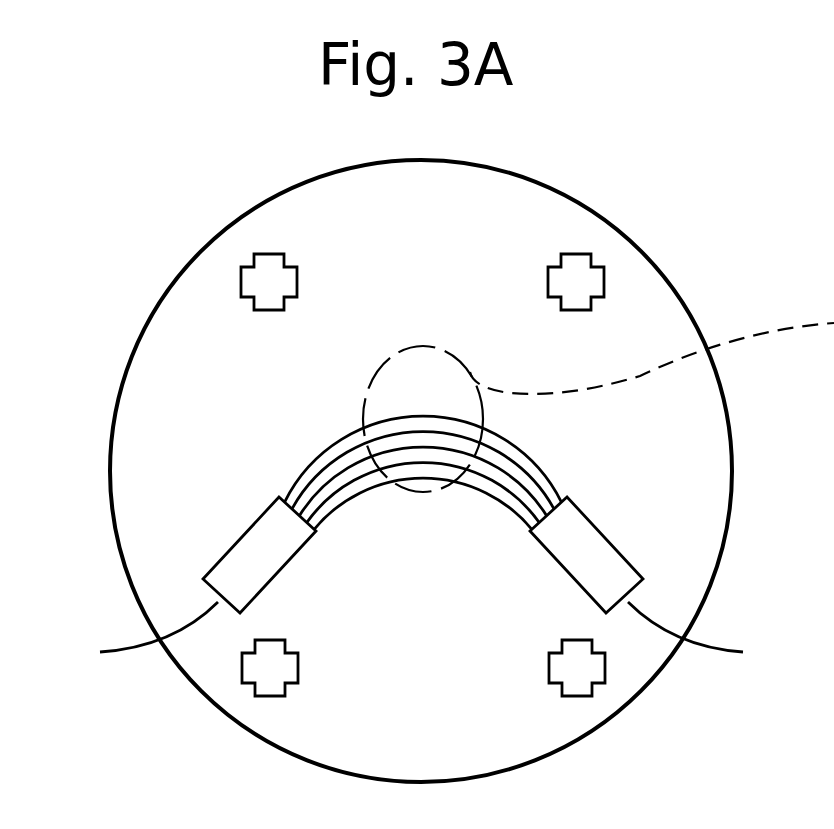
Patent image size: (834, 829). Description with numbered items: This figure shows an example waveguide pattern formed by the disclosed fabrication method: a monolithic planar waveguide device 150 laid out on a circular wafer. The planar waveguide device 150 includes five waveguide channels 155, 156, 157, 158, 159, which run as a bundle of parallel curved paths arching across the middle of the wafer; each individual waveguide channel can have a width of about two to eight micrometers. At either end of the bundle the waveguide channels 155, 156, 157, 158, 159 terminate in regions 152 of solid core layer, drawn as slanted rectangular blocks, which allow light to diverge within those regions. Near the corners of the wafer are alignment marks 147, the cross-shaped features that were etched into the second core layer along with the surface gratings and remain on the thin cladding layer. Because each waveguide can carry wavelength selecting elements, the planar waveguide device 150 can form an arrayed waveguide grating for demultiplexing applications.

The alignment marks 147 is at (241, 281).
The planar waveguide device 150 is at (276, 445).
The regions of solid core layer 152 is at (231, 543).
The waveguide channel 155 is at (334, 509).
The waveguide channel 156 is at (364, 412).
The waveguide channel 157 is at (450, 452).
The waveguide channel 158 is at (503, 496).
The waveguide channel 159 is at (517, 517).